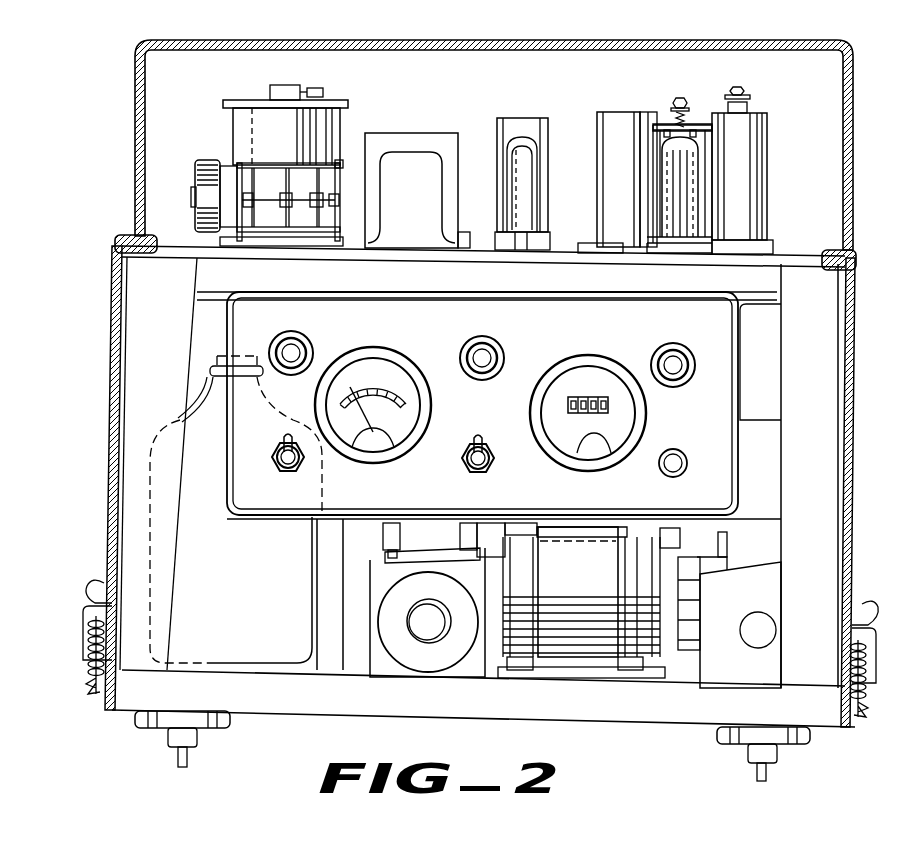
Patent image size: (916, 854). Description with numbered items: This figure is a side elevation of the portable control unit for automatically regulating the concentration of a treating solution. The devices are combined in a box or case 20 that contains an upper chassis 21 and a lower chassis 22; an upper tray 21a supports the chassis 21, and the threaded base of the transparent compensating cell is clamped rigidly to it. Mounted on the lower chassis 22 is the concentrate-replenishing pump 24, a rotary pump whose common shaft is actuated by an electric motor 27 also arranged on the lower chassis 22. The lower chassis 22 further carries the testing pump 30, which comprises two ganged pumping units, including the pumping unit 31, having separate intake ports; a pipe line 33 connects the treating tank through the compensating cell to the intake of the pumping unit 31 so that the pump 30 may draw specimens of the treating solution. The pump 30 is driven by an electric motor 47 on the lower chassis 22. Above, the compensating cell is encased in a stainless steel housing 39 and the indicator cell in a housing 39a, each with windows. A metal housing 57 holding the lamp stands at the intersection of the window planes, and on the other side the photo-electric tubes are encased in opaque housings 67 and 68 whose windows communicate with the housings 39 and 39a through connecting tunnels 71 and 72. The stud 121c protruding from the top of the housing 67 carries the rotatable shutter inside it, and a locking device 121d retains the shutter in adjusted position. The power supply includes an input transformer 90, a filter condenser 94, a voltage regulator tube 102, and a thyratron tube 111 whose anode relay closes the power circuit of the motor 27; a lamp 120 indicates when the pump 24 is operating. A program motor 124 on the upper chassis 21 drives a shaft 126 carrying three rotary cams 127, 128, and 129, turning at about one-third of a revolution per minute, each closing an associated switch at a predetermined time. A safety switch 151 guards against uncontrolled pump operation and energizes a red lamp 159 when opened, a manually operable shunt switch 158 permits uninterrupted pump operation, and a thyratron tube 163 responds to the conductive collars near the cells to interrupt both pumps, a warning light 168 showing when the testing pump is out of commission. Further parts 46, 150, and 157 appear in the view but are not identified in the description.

The box or case 20 is at (118, 302).
The upper chassis 21 is at (557, 258).
The upper tray 21a is at (527, 290).
The lower chassis 22 is at (273, 668).
The pump 24 is at (767, 590).
The electric motor 27 is at (666, 548).
The pump 30 is at (372, 690).
The pumping unit 31 is at (440, 673).
The pipe line 33 is at (464, 530).
The cylindrical metal shell or housing 39 is at (703, 138).
The housing 39a is at (657, 137).
The container 46 is at (237, 550).
The electric motor 47 is at (577, 579).
The housing 57 is at (697, 113).
The housing 67 is at (727, 195).
The housing 68 is at (622, 163).
The connecting tunnel 71 is at (710, 170).
The connecting tunnel 72 is at (653, 165).
The input transformer 90 is at (400, 145).
The condenser 94 is at (501, 166).
The voltage regulator tube 102 is at (513, 137).
The thyratron tube 111 is at (520, 192).
The lamp 120 is at (291, 352).
The stud 121c is at (741, 92).
The locking device 121d is at (747, 104).
The program motor 124 is at (207, 182).
The shaft 126 is at (333, 201).
The rotary cam 127 is at (340, 163).
The rotary cam 128 is at (292, 164).
The rotary cam 129 is at (253, 180).
The coil assembly 150 is at (282, 157).
The safety switch 151 is at (491, 463).
The terminal 157 is at (323, 92).
The manually operable shunt switch 158 is at (283, 461).
The red lamp 159 is at (484, 358).
The thyratron tube 163 is at (673, 202).
The warning light 168 is at (673, 357).